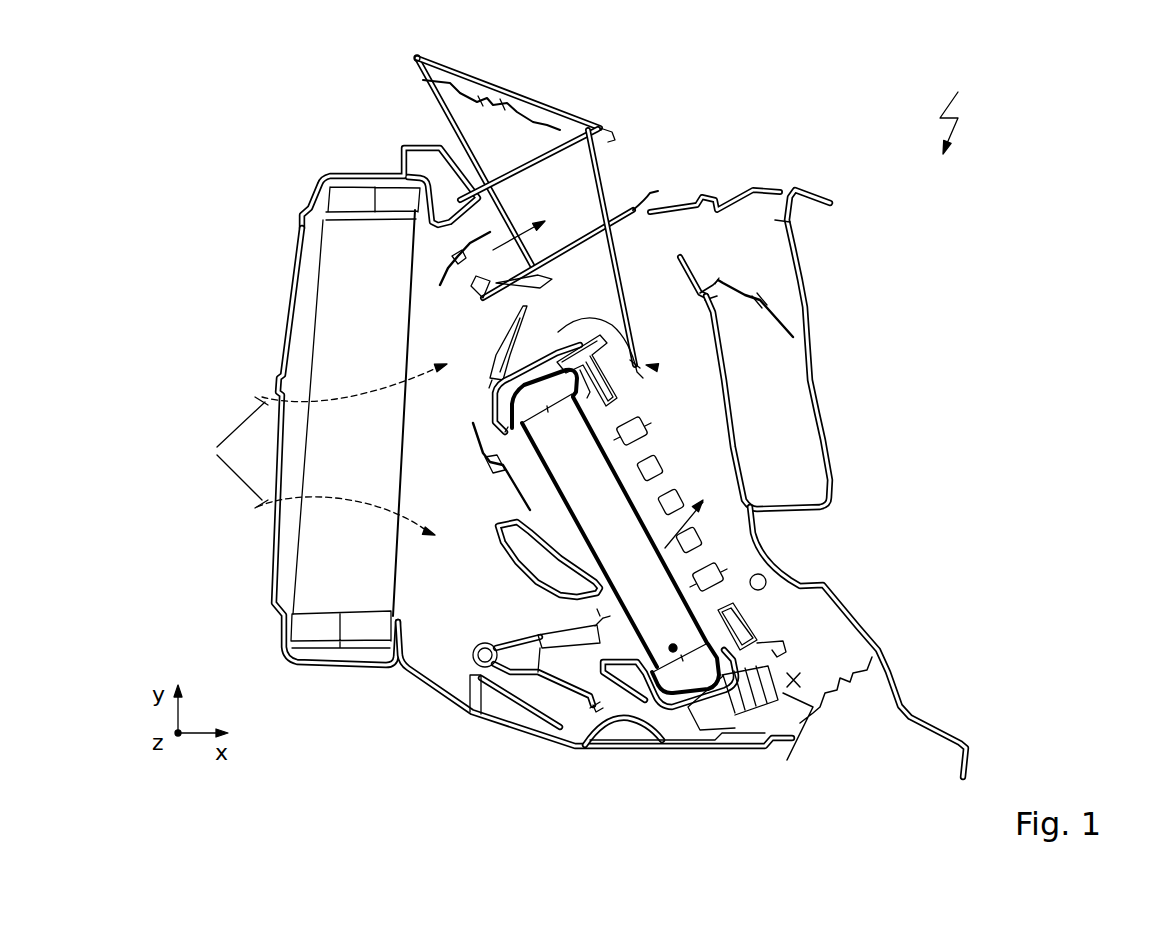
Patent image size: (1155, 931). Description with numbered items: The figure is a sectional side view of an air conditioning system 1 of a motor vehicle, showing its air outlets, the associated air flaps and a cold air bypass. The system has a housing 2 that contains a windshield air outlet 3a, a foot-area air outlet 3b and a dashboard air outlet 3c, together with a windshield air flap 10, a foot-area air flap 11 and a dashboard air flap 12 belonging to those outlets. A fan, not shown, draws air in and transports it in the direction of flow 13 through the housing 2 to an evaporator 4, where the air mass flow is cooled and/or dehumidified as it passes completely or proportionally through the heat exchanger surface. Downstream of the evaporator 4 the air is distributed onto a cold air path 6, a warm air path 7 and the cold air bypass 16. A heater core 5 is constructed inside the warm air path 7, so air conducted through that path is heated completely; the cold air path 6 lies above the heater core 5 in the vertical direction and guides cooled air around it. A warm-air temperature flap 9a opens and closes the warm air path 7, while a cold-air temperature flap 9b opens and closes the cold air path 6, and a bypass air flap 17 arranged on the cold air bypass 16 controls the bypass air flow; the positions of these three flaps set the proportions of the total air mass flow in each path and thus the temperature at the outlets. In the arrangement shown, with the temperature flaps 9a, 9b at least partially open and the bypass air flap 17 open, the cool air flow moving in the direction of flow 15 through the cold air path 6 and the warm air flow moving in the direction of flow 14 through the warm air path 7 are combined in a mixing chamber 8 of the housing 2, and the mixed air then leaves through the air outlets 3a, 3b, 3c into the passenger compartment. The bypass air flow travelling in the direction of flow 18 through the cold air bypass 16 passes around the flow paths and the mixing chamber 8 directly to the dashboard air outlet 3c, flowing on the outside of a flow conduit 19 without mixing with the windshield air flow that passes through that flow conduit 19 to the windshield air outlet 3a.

The air conditioning system 1 is at (960, 105).
The housing 2 is at (415, 688).
The windshield air outlet 3a is at (558, 78).
The foot-area air outlet 3b is at (800, 450).
The dashboard air outlet 3c is at (712, 163).
The evaporator 4 is at (340, 233).
The heater core 5 is at (673, 648).
The cold air path 6 is at (593, 305).
The warm air path 7 is at (716, 475).
The mixing chamber 8 is at (677, 323).
The warm-air temperature flap 9a is at (483, 460).
The cold-air temperature flap 9b is at (510, 338).
The windshield air flap 10 is at (540, 123).
The foot-area air flap 11 is at (795, 337).
The dashboard air flap 12 is at (757, 190).
The direction of flow 13 is at (316, 449).
The direction of flow 14 is at (713, 500).
The direction of flow 15 is at (657, 370).
The cold air bypass 16 is at (605, 203).
The bypass air flap 17 is at (440, 268).
The direction of flow 18 is at (477, 167).
The flow conduit 19 is at (620, 170).